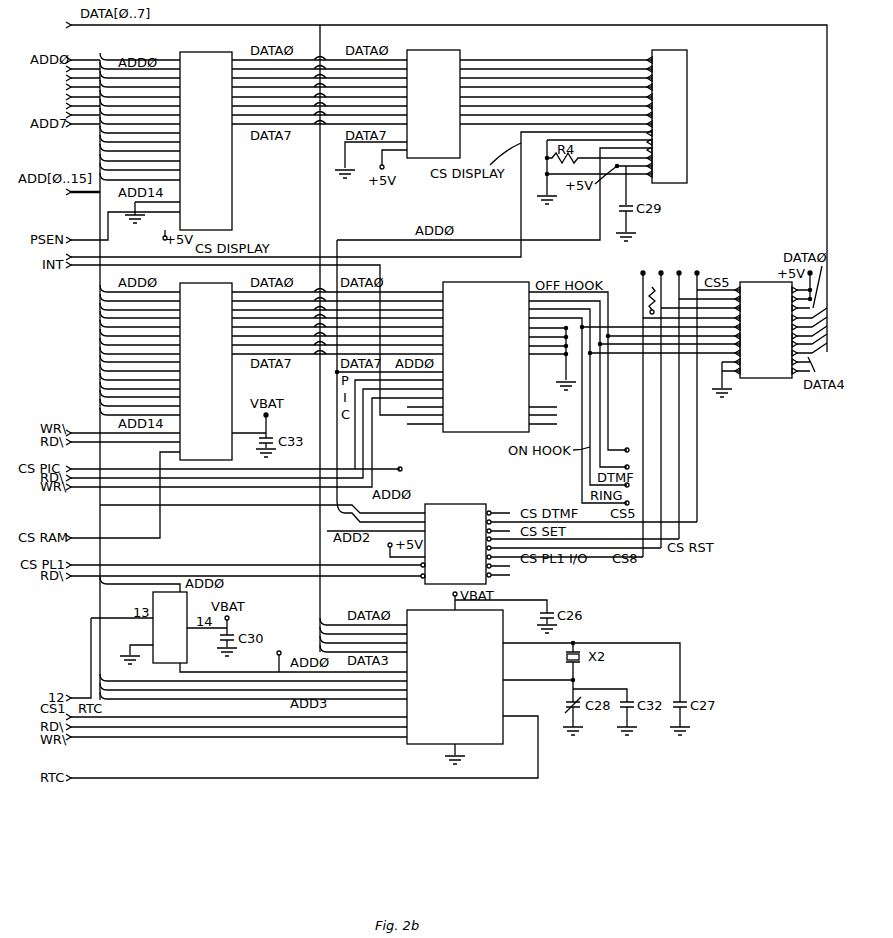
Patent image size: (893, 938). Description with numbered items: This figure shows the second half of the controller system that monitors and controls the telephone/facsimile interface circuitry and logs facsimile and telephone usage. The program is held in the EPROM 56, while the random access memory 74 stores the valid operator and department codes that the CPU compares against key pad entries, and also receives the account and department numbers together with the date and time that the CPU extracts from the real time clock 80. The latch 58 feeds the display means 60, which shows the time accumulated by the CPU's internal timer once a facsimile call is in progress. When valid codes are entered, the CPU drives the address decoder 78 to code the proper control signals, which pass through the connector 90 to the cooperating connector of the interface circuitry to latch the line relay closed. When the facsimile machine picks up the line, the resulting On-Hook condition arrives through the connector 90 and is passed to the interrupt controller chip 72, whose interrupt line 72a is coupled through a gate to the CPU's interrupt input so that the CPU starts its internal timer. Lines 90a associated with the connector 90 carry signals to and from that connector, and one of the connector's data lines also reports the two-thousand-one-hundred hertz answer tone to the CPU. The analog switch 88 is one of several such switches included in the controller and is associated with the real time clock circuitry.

The EPROM 56 is at (198, 60).
The latch 58 is at (433, 59).
The display means 60 is at (682, 62).
The interrupt controller chip 72 is at (471, 290).
The interrupt line 72a is at (392, 416).
The random access memory (RAM) 74 is at (221, 292).
The address decoder 78 is at (455, 504).
The real time clock 80 is at (425, 617).
The analog switch 88 is at (190, 604).
The connector 90 is at (753, 287).
The pull-up lines to PLI connector 90a is at (624, 322).